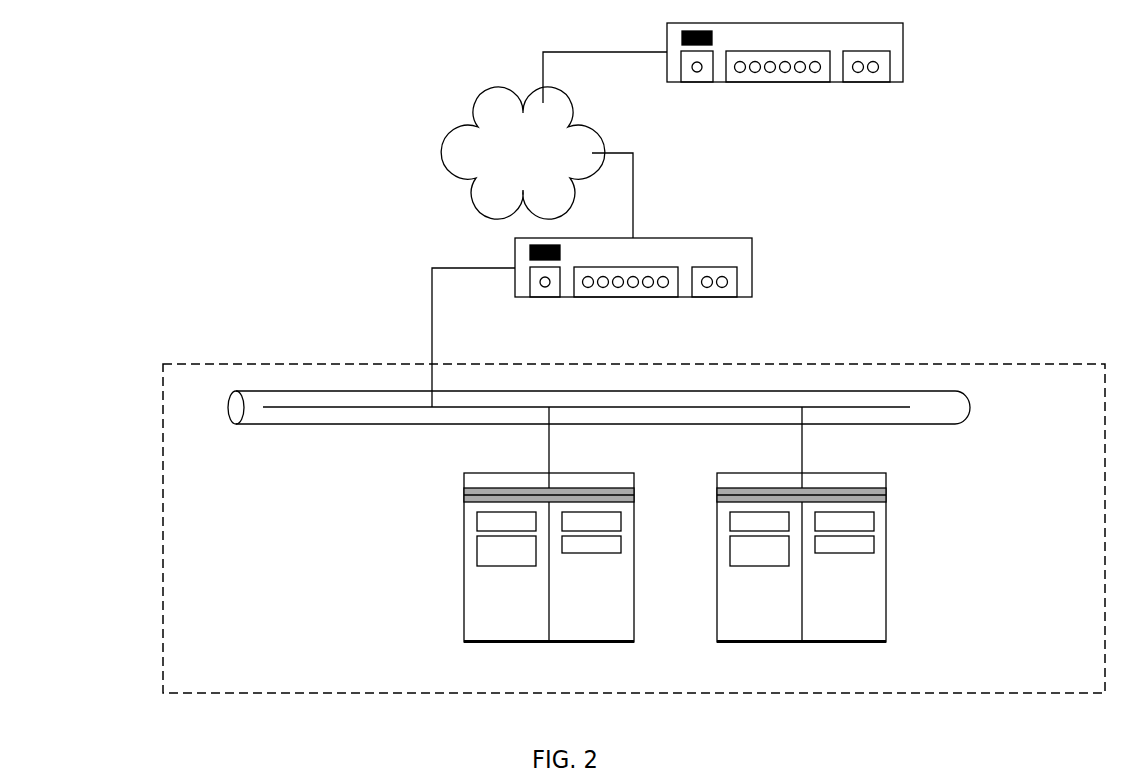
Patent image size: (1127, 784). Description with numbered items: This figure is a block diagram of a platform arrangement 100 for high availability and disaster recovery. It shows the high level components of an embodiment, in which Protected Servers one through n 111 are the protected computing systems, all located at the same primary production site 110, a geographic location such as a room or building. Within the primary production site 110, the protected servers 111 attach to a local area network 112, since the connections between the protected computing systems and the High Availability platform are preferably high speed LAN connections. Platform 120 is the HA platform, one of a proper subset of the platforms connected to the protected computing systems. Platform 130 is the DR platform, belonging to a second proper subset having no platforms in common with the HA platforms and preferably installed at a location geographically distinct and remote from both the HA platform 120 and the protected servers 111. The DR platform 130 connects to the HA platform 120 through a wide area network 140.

The system 100 is at (302, 48).
The primary production site 110 is at (163, 528).
The protected servers 111 is at (400, 575).
The LAN 112 is at (280, 424).
The HA platform 120 is at (752, 268).
The DR platform 130 is at (903, 52).
The WAN 140 is at (455, 152).